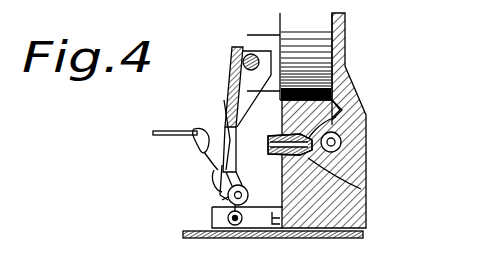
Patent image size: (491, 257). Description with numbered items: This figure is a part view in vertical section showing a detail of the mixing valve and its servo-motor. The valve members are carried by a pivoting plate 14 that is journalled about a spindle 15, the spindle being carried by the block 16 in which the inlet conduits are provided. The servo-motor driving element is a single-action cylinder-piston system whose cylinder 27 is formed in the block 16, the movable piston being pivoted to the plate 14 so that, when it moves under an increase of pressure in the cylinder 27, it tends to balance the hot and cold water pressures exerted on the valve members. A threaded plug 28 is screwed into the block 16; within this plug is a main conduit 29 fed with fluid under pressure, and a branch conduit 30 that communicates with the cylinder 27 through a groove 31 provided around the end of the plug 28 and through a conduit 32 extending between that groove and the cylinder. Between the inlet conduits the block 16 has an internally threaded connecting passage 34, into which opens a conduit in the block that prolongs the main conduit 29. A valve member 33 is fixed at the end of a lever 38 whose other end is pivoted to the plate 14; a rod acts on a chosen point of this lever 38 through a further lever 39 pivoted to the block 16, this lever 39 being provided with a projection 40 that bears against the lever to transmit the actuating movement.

The pivoting plate 14 is at (228, 97).
The spindle 15 is at (249, 54).
The block 16 is at (282, 237).
The cylinder 27 is at (347, 70).
The threaded plug 28 is at (282, 163).
The main conduit 29 is at (350, 182).
The branch conduit 30 is at (228, 114).
The groove 31 is at (298, 124).
The conduit 32 is at (356, 121).
The valve member 33 is at (216, 152).
The connecting passage 34 is at (343, 145).
The lever 38 is at (232, 178).
The lever 39 is at (230, 202).
The projection 40 is at (183, 202).